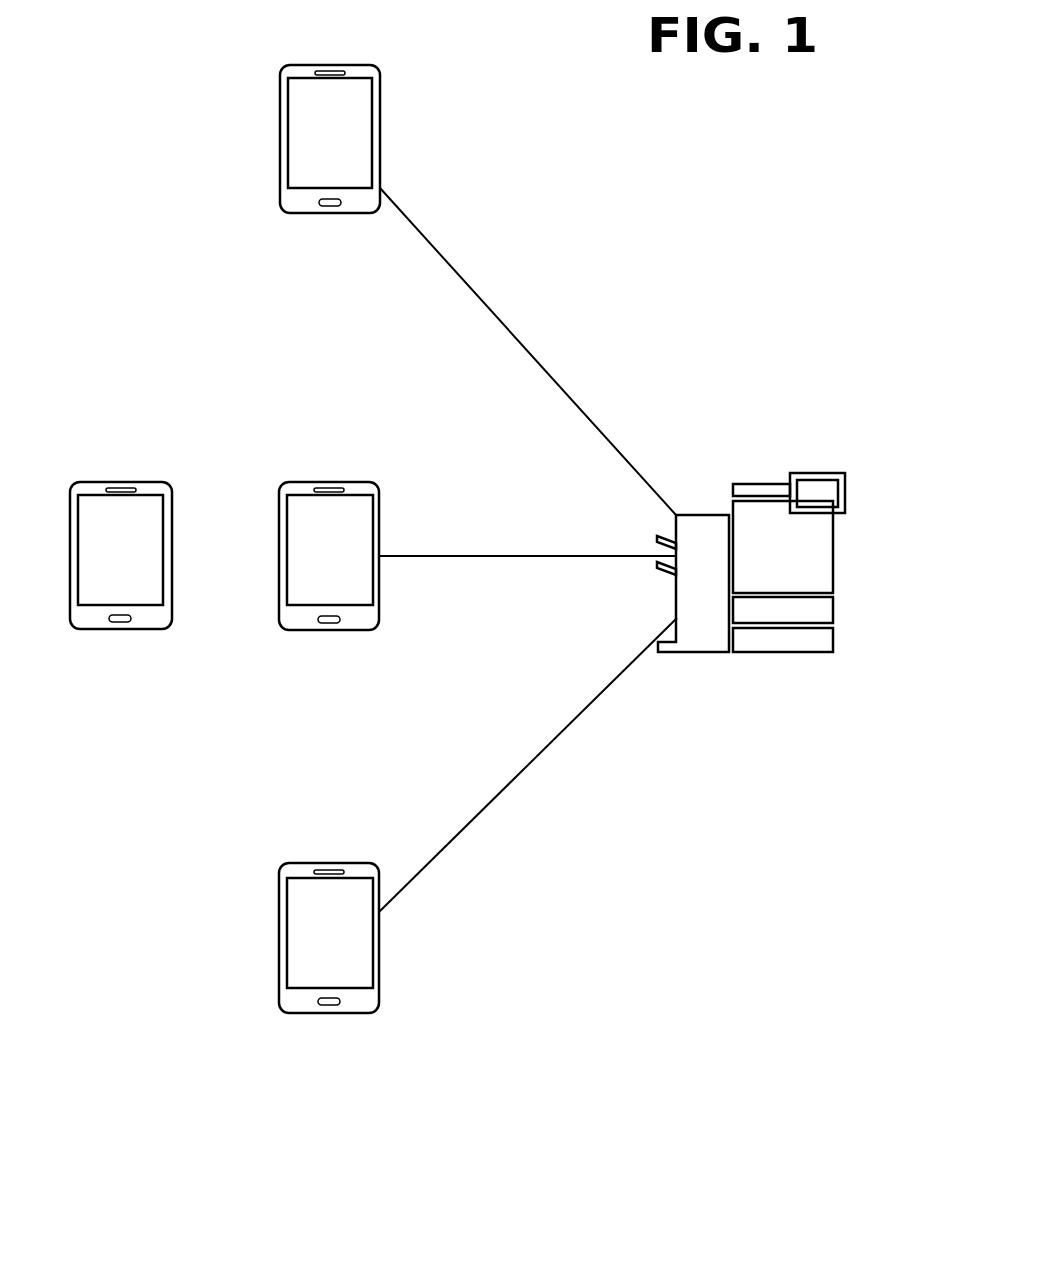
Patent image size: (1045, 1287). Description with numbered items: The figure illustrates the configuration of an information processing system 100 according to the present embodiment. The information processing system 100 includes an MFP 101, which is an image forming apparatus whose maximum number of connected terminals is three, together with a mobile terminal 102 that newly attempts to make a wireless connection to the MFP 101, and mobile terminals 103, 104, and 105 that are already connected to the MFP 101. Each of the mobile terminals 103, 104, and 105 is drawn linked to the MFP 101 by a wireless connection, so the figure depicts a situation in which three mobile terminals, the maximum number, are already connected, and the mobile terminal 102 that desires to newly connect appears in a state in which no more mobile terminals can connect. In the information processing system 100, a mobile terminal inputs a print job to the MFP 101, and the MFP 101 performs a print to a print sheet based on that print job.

The information processing system 100 is at (460, 1152).
The MFP 101 is at (763, 483).
The mobile terminal 102 is at (146, 481).
The mobile terminal 103 is at (355, 63).
The mobile terminal 104 is at (355, 481).
The mobile terminal 105 is at (355, 862).